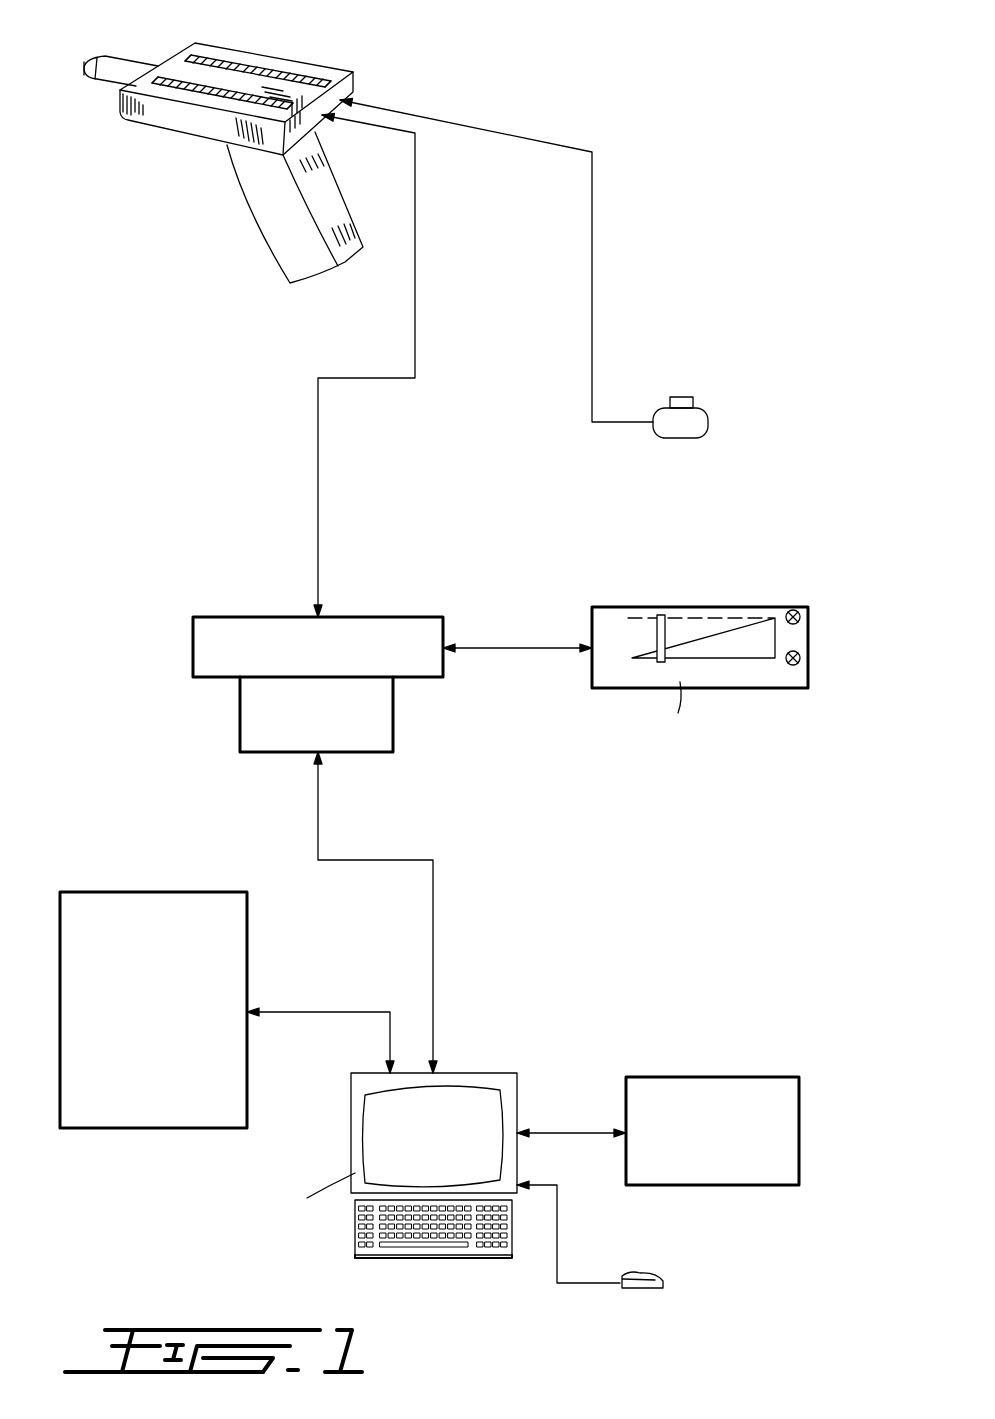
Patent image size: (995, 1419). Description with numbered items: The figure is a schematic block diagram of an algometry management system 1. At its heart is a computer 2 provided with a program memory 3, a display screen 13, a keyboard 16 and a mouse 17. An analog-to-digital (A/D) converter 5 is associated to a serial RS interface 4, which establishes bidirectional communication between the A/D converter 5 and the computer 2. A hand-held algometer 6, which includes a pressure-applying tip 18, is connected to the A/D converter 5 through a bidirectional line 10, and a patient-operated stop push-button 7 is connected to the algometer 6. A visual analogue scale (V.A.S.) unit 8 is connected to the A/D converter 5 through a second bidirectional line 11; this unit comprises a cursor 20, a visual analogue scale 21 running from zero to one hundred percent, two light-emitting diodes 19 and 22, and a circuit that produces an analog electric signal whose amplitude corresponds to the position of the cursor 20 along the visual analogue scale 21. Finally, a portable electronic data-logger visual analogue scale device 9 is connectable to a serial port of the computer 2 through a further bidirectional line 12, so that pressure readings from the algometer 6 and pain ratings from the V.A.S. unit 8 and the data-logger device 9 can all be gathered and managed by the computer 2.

The algometry management system 1 is at (115, 422).
The computer 2 is at (352, 1195).
The program memory 3 is at (748, 1083).
The RS 232 interface 4 is at (387, 743).
The analog-to-digital (A/D) converter 5 is at (410, 627).
The algometer 6 is at (350, 70).
The patient-operated stop push-button 7 is at (703, 422).
The visual analogue scale (V.A.S.) unit 8 is at (808, 633).
The portable electronic data-logger visual analogue scale device 9 is at (82, 897).
The bidirectional line 10 is at (415, 253).
The bidirectional line 11 is at (522, 648).
The bidirectional line 12 is at (300, 1012).
The display screen 13 is at (492, 1150).
The keyboard 16 is at (397, 1242).
The mouse 17 is at (663, 1283).
The pressure-applying tip 18 is at (87, 58).
The light-emitting diode (LED) 19 is at (795, 607).
The cursor 20 is at (663, 607).
The visual analogue scale 21 is at (730, 640).
The light-emitting diode (LED) 22 is at (805, 663).